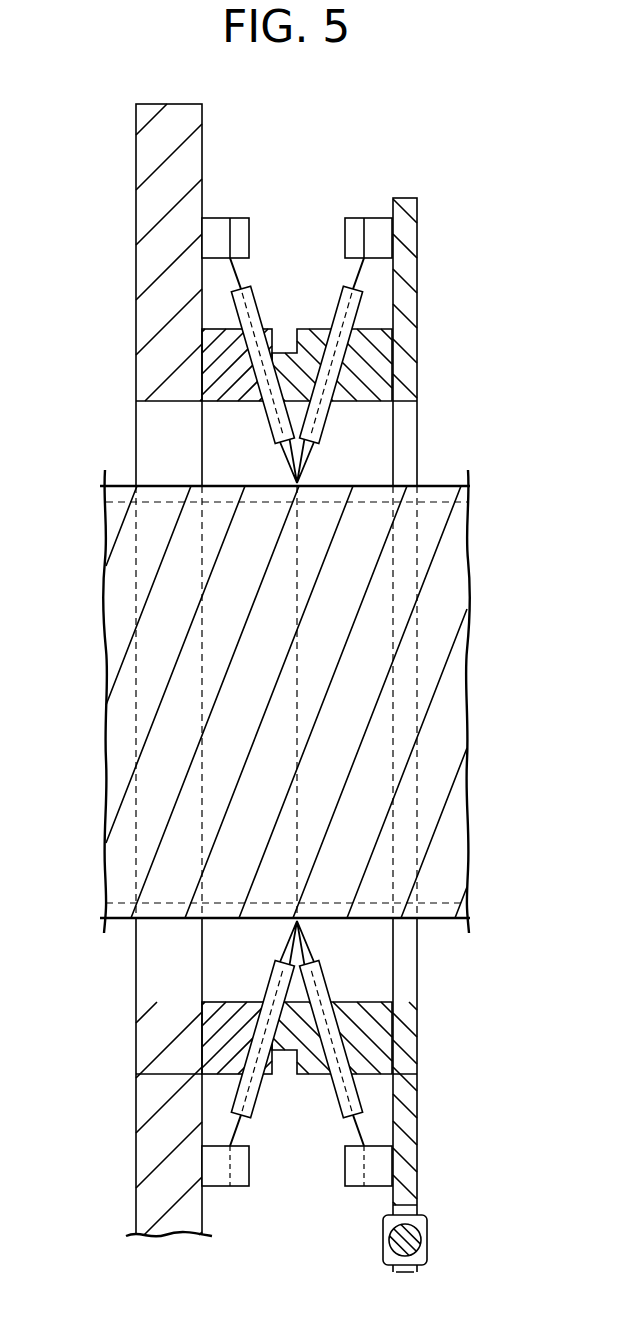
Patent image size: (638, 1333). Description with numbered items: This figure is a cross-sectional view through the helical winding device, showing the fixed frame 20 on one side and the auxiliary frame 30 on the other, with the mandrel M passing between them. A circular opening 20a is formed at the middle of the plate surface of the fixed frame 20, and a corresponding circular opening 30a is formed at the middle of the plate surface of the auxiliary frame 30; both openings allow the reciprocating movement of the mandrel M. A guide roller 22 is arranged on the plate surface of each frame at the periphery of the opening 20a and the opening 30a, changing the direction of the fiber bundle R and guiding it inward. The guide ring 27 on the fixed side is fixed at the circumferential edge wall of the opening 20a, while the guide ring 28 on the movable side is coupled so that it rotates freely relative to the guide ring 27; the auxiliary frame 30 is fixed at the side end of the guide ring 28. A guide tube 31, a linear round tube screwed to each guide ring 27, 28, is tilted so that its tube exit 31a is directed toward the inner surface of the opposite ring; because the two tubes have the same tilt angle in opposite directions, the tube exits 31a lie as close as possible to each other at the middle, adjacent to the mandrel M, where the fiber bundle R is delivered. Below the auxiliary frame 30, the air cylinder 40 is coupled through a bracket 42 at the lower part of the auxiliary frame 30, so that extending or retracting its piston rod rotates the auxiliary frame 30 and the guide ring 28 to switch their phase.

The fixed frame 20 is at (135, 205).
The guide roller 22 is at (240, 223).
The guide ring 27 is at (217, 368).
The guide ring 28 is at (380, 352).
The auxiliary frame 30 is at (418, 283).
The circular opening 20a is at (170, 405).
The circular opening 30a is at (405, 403).
The guide tube 31 is at (270, 412).
The tube exit 31a is at (288, 448).
The fiber bundle R is at (354, 278).
The mandrel M is at (437, 918).
The air cylinder 40 is at (428, 1228).
The bracket 42 is at (398, 1272).